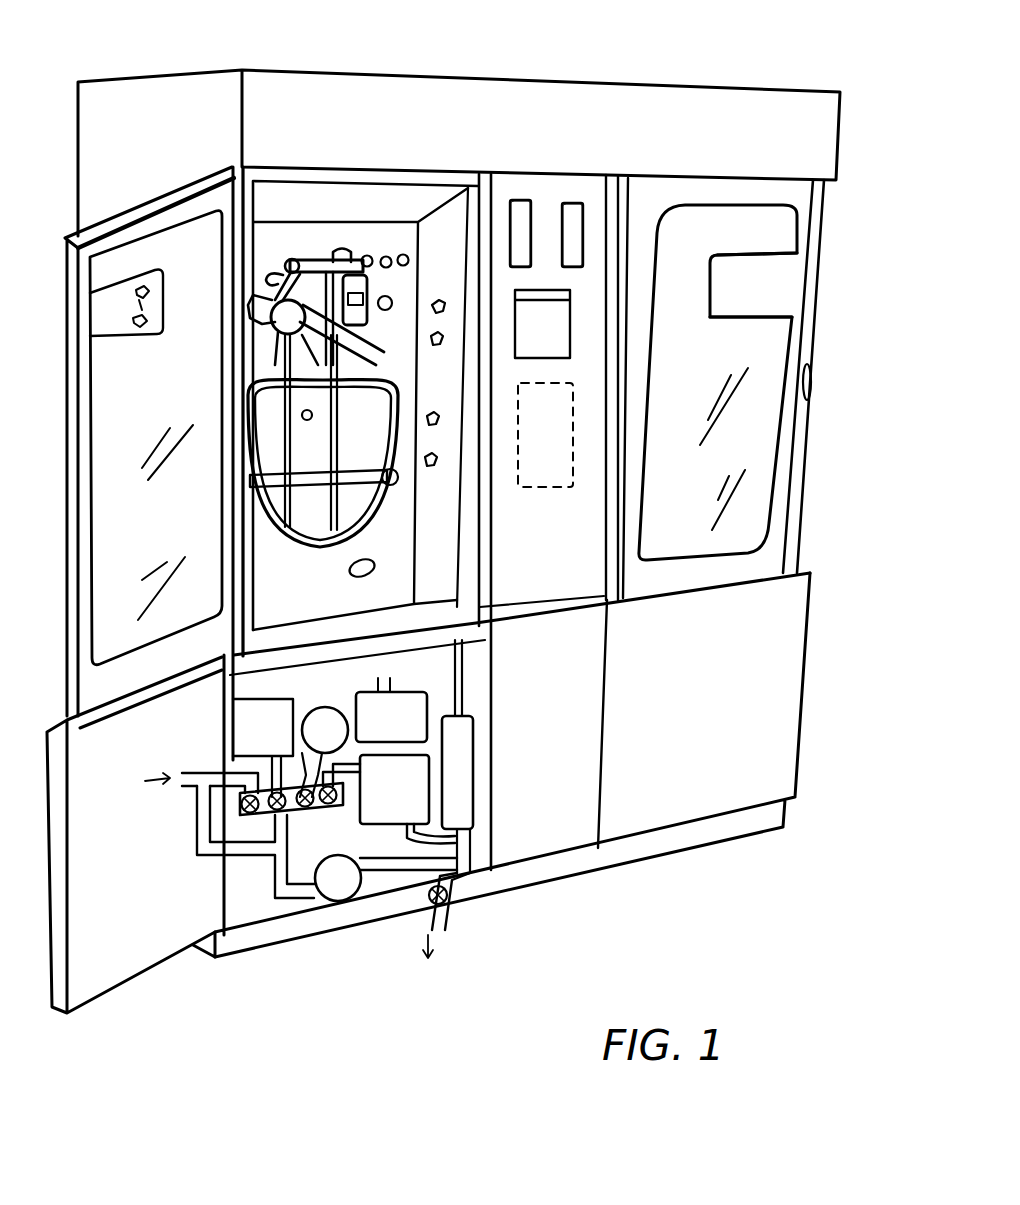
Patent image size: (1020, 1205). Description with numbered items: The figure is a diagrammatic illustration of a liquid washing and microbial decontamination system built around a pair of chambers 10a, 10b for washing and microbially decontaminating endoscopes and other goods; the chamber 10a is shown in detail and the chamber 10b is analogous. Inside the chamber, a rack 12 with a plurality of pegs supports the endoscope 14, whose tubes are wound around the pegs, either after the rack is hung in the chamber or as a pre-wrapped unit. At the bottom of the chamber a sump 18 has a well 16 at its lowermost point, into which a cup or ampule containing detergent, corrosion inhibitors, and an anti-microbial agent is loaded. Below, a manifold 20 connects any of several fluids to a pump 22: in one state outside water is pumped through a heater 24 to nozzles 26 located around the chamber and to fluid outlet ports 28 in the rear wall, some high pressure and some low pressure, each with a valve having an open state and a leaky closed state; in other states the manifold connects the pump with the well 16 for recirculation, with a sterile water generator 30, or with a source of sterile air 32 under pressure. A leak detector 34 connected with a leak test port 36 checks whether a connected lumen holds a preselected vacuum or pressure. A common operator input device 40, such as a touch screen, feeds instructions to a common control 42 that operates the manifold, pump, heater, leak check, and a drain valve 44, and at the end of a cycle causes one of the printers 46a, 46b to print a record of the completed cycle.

The chamber 10a is at (436, 166).
The chamber 10b is at (752, 165).
The rack 12 is at (318, 255).
The endoscope 14 is at (372, 352).
The well 16 is at (272, 745).
The sump 18 is at (374, 566).
The manifold 20 is at (300, 806).
The pump 22 is at (360, 862).
The heater 24 is at (458, 770).
The nozzles 26 is at (127, 299).
The fluid outlet ports 28 is at (382, 256).
The sterile water generator 30 is at (447, 847).
The source of sterile air 32 is at (325, 707).
The leak detector 34 is at (427, 650).
The leak test port 36 is at (380, 298).
The operator input device 40 is at (548, 330).
The control 42 is at (528, 470).
The drain valve 44 is at (458, 895).
The printer 46a is at (522, 212).
The printer 46b is at (570, 214).